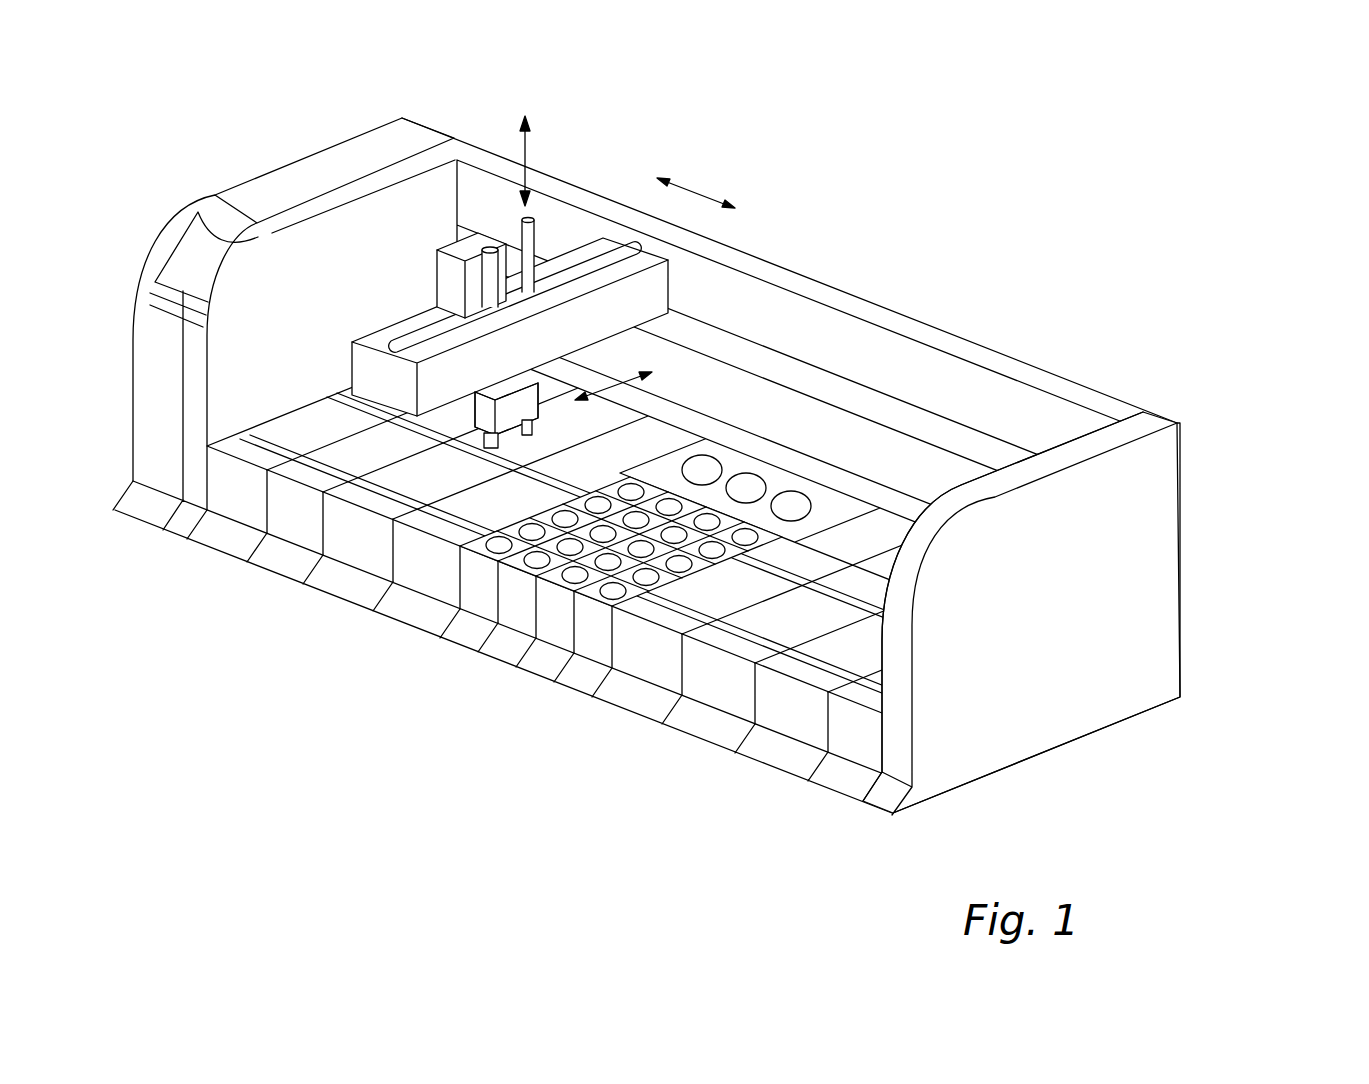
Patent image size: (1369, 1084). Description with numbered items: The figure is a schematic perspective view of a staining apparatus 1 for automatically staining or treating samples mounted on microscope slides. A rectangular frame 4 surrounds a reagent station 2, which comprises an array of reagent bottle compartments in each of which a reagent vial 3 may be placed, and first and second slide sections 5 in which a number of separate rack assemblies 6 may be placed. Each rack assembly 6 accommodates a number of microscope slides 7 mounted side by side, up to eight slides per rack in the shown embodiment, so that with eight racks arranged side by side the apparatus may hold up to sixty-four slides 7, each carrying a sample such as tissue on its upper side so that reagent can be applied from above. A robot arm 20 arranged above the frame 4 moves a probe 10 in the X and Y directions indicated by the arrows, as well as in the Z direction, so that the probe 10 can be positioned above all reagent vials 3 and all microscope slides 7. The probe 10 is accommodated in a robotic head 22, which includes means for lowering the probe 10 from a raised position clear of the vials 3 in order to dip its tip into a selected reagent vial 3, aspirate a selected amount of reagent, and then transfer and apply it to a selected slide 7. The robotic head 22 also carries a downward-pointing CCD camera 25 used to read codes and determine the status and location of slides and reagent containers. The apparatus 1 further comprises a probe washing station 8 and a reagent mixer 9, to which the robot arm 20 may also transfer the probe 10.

The staining apparatus 1 is at (1210, 312).
The reagent station 2 is at (513, 613).
The reagent vial 3 is at (605, 593).
The rectangular frame 4 is at (1130, 525).
The slide section 5 is at (220, 432).
The rack assembly 6 is at (287, 518).
The microscope slide 7 is at (210, 446).
The probe washing station 8 is at (706, 468).
The reagent mixer 9 is at (800, 505).
The probe 10 is at (440, 450).
The robot arm 20 is at (635, 258).
The robotic head 22 is at (530, 383).
The CCD camera 25 is at (392, 468).